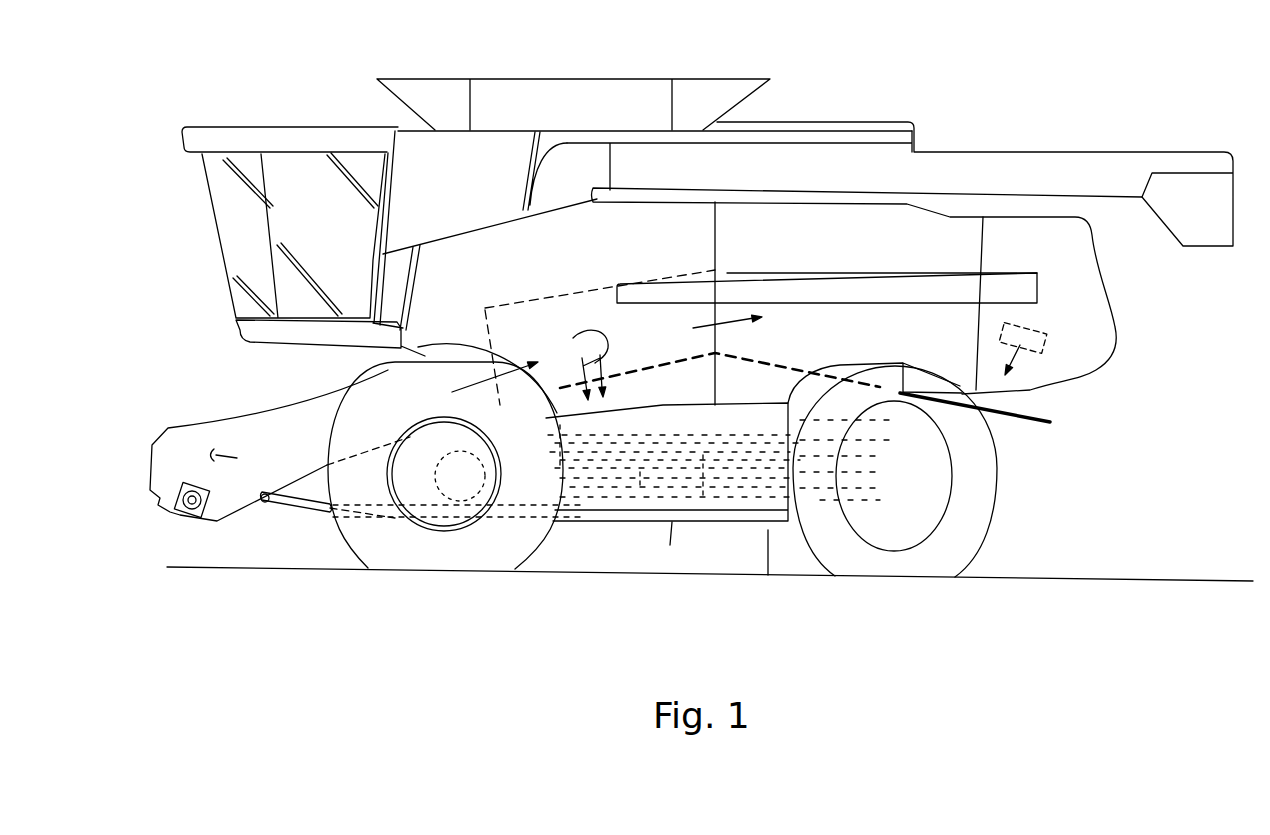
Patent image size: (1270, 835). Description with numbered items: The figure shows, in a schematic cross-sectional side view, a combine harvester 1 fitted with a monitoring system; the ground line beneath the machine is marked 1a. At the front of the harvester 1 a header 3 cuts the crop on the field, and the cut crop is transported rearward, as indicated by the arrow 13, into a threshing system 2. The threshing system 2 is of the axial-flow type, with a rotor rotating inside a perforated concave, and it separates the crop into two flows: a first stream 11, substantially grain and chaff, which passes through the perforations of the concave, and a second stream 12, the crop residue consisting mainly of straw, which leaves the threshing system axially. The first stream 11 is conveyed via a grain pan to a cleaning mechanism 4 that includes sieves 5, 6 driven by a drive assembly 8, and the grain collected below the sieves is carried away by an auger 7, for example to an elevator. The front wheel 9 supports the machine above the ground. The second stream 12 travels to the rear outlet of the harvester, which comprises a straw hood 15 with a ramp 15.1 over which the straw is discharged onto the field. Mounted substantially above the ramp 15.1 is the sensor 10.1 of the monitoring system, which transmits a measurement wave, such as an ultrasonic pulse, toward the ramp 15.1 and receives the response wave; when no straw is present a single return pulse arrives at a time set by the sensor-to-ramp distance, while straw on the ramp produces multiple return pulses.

The combine harvester 1 is at (1102, 72).
The underside of combine harvester 1a is at (768, 575).
The threshing system 2 is at (528, 300).
The header 3 is at (153, 416).
The cleaning mechanism 4 is at (815, 417).
The sieve 5 is at (647, 433).
The sieve 6 is at (603, 463).
The auger 7 is at (680, 550).
The drive assembly 8 is at (640, 485).
The front wheel 9 is at (463, 493).
The sensor 10.1 is at (1030, 345).
The first stream 11 is at (530, 365).
The second stream 12 is at (733, 328).
The cut crop entering the threshing system 13 is at (457, 392).
The straw hood 15 is at (1098, 399).
The ramp 15.1 is at (997, 418).